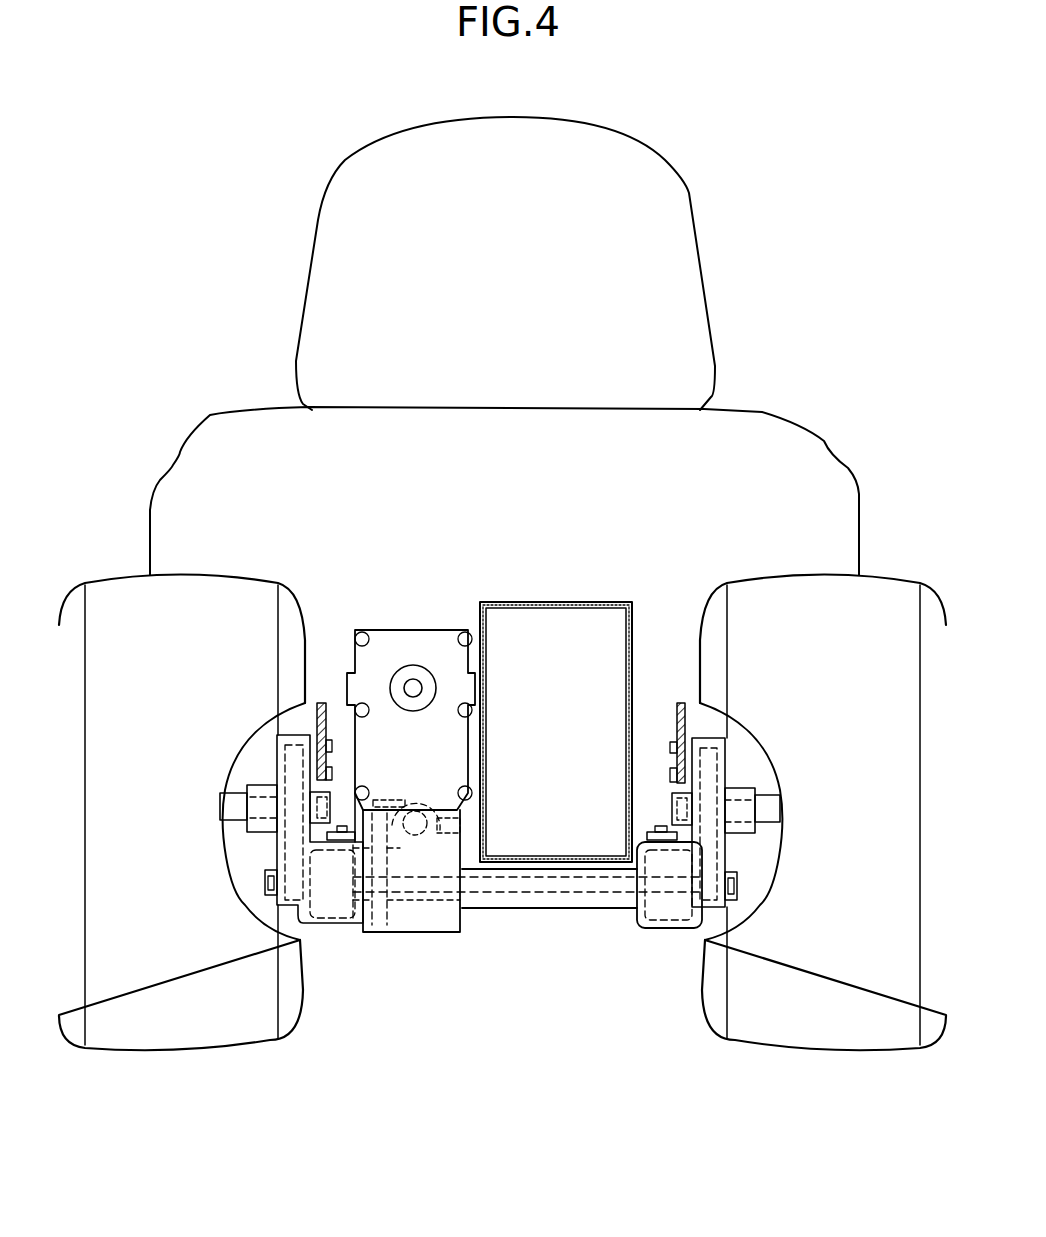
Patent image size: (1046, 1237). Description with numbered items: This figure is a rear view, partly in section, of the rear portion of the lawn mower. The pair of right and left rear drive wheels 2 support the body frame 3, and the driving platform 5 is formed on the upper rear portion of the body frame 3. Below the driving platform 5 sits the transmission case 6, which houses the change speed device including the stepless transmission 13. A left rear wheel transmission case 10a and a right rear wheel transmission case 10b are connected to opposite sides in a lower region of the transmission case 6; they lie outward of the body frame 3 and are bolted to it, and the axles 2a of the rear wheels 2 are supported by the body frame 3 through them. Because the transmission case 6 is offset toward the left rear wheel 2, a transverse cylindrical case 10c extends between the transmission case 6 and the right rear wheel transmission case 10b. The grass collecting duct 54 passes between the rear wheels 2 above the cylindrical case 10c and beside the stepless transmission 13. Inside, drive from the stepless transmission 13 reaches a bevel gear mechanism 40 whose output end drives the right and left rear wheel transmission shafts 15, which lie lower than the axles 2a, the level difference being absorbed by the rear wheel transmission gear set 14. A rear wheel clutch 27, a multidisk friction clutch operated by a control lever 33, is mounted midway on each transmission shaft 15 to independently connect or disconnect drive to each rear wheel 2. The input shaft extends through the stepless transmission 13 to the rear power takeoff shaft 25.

The rear drive wheels 2 is at (178, 1047).
The axles 2a is at (235, 800).
The body frame 3 is at (322, 703).
The driving platform 5 is at (300, 216).
The transmission case 6 is at (455, 938).
The left rear wheel transmission case 10a is at (277, 752).
The right rear wheel transmission case 10b is at (727, 755).
The transverse cylindrical case 10c is at (588, 908).
The stepless transmission 13 is at (430, 637).
The rear wheel transmission gear set 14 is at (276, 844).
The rear wheel transmission shafts 15 is at (257, 886).
The rear power takeoff shaft 25 is at (412, 680).
The rear wheel clutch 27 is at (321, 926).
The control levers 33 is at (344, 827).
The bevel gear mechanism 40 is at (410, 858).
The grass collecting duct 54 is at (578, 600).